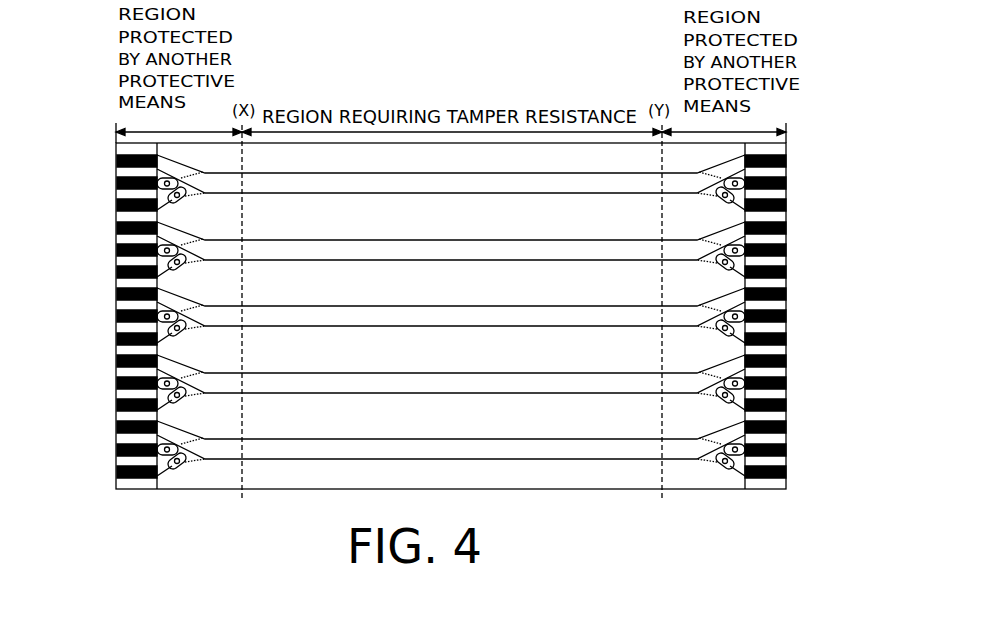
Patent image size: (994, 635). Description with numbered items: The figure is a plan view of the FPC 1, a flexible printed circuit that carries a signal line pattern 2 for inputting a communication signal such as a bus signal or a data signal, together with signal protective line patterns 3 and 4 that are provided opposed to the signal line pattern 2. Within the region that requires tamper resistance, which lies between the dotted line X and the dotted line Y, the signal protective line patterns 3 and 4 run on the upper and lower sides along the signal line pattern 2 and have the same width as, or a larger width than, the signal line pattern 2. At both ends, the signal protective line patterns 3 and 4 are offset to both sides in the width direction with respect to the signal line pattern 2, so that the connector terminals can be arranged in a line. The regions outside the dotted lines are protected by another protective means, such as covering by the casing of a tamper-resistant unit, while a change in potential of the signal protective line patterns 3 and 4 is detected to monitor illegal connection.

The FPC 1 is at (450, 94).
The signal line pattern 2 is at (446, 310).
The signal protective line pattern 3 is at (445, 286).
The signal protective line pattern 4 is at (445, 333).